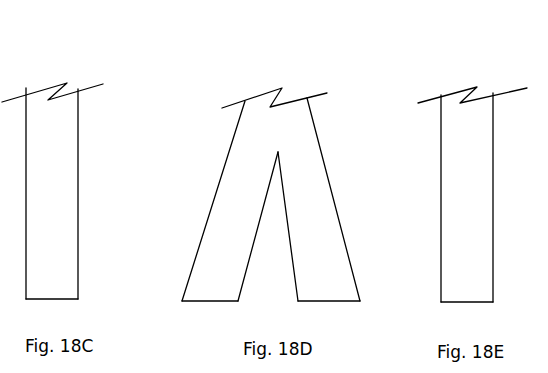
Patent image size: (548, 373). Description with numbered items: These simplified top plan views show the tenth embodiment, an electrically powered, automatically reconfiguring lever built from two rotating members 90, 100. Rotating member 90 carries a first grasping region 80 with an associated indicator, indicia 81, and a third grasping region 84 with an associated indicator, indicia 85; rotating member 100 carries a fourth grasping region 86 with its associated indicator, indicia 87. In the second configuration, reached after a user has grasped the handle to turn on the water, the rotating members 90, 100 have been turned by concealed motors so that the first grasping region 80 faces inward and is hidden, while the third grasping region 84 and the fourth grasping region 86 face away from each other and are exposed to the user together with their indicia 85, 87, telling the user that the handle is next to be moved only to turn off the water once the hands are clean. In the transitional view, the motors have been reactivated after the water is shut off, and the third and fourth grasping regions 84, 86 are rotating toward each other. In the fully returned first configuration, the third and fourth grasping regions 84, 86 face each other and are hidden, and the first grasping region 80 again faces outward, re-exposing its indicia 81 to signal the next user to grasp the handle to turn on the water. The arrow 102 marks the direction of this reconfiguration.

In FIG. 18E, the first grasping region 80 is at (457, 188).
In FIG. 18E, the indicia 81 is at (450, 261).
In FIG. 18C, the third grasping region 84 is at (60, 198).
In FIG. 18D, the third grasping region 84 is at (228, 182).
In FIG. 18C, the indicia 85 is at (63, 255).
In FIG. 18D, the indicia 85 is at (195, 265).
In FIG. 18D, the fourth grasping region 86 is at (318, 180).
In FIG. 18D, the indicia 87 is at (342, 262).
In FIG. 18C, the rotating member 90 is at (63, 292).
In FIG. 18D, the rotating member 90 is at (215, 295).
In FIG. 18E, the rotating member 90 is at (467, 295).
In FIG. 18D, the rotating member 100 is at (332, 293).
In FIG. 18C, the direction indicator 102 is at (52, 59).
In FIG. 18D, the direction indicator 102 is at (274, 64).
In FIG. 18E, the direction indicator 102 is at (472, 61).